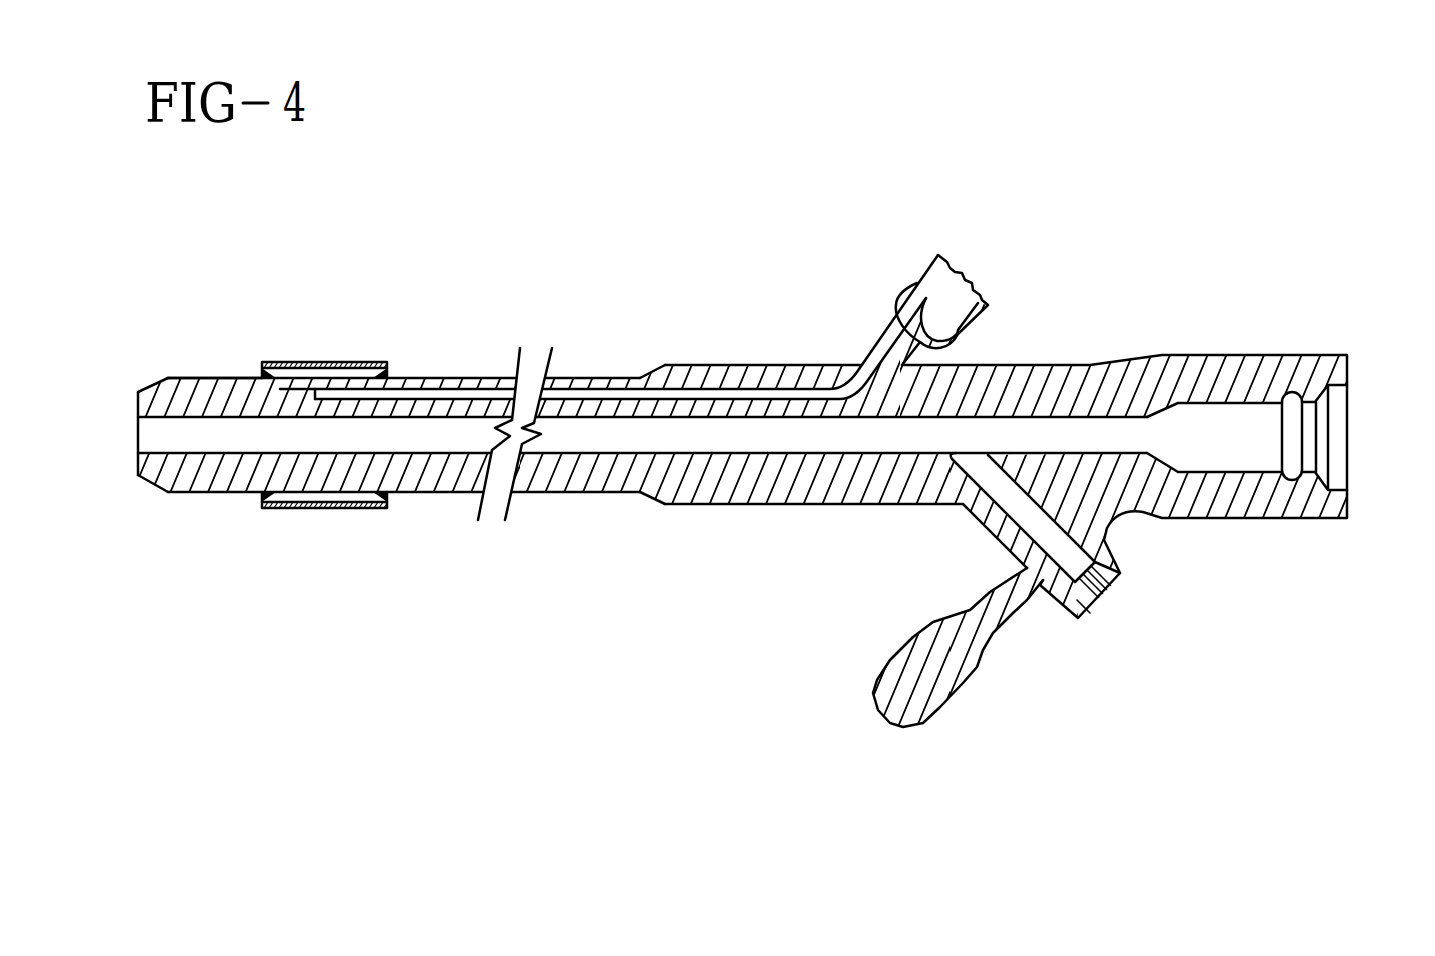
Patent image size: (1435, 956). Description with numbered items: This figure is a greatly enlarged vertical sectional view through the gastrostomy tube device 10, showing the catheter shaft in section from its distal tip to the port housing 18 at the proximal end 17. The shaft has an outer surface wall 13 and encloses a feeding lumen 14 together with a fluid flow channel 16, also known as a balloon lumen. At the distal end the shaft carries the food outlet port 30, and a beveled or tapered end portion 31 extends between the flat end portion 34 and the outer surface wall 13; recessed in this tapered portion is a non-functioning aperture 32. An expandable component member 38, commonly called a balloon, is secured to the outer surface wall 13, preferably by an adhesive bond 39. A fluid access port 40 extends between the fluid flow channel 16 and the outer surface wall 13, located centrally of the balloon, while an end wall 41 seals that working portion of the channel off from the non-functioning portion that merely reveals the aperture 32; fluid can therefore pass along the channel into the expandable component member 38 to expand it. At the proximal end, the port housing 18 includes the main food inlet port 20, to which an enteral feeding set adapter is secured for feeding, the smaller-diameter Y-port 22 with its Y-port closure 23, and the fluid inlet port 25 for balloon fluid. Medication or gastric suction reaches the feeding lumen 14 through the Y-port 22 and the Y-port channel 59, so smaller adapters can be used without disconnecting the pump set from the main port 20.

The gastrostomy tube device 10 is at (586, 332).
The outer surface wall 13 is at (488, 384).
The feeding lumen 14 is at (250, 437).
The fluid flow channel 16 is at (430, 395).
The proximal end 17 is at (648, 374).
The port housing 18 is at (1102, 333).
The main food inlet port 20 is at (1338, 440).
The Y-port 22 is at (1100, 590).
The Y-port closure 23 is at (940, 690).
The fluid inlet port 25 is at (918, 278).
The food outlet port 30 is at (141, 434).
The beveled or tapered end portion 31 is at (148, 473).
The non-functioning aperture 32 is at (198, 378).
The flat end portion 34 is at (140, 398).
The expandable component member 38 is at (338, 362).
The adhesive bond 39 is at (262, 371).
The fluid access port 40 is at (320, 383).
The end wall 41 is at (293, 387).
The Y-port channel 59 is at (1013, 500).